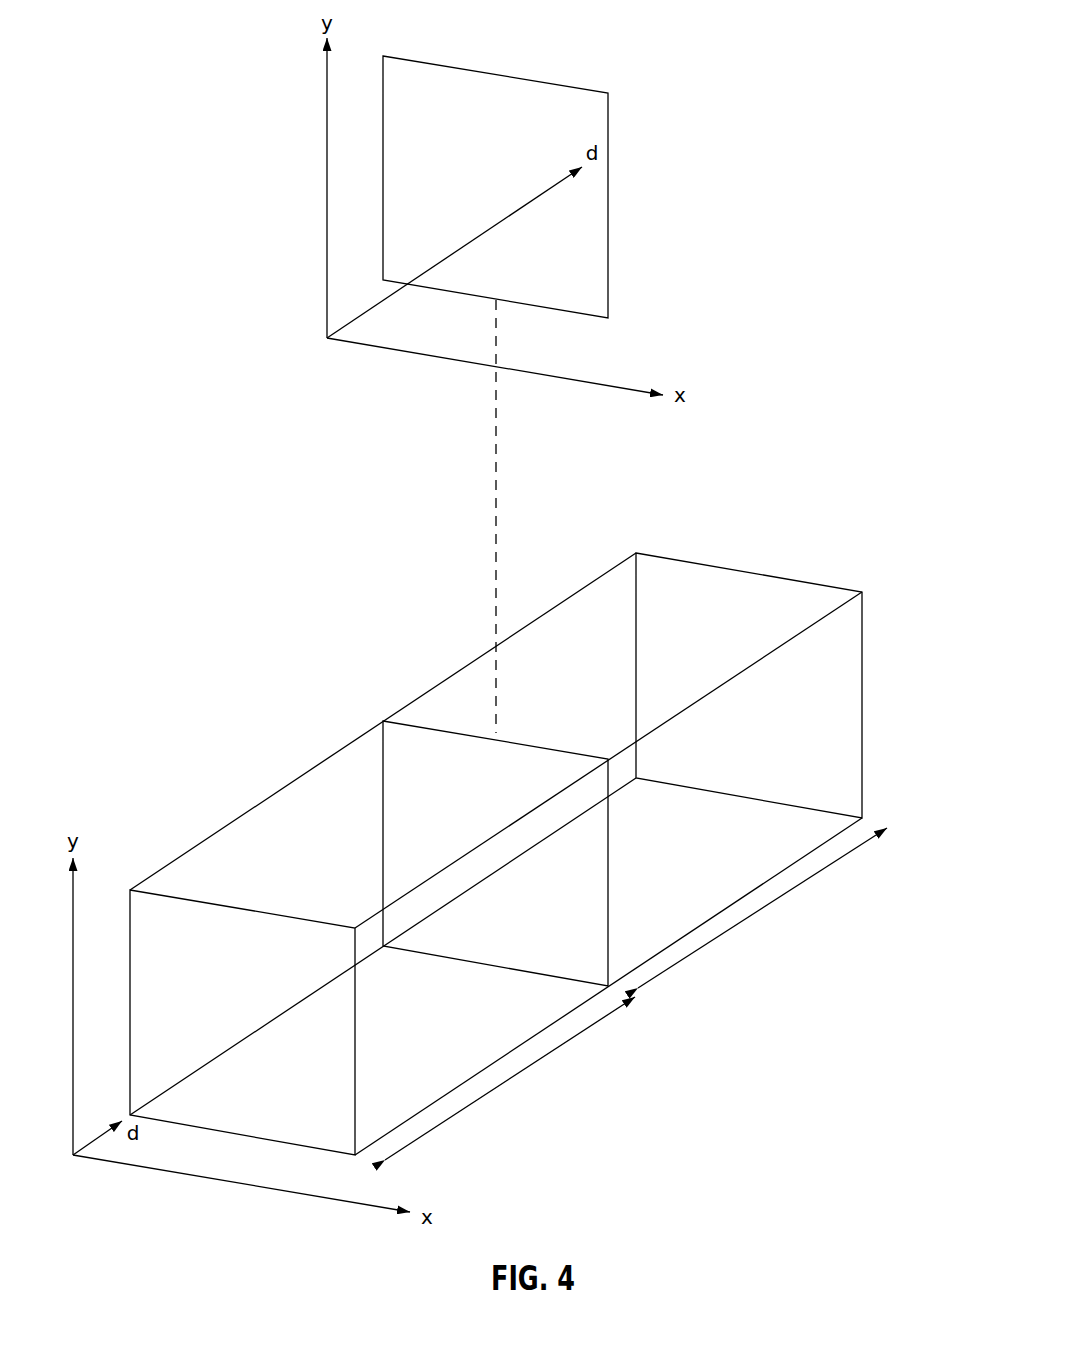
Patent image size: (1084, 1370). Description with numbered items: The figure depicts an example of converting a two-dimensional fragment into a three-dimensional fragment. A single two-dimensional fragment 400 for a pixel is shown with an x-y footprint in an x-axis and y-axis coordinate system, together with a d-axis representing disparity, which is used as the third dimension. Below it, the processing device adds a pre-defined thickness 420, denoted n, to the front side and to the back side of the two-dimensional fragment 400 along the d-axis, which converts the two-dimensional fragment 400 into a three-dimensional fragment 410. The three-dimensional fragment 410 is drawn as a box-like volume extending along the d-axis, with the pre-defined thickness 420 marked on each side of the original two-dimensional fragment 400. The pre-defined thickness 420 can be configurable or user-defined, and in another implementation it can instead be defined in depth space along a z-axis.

The 2D fragment 400 is at (605, 85).
The 3D fragment 410 is at (863, 568).
The pre-defined thickness 420 is at (797, 929).